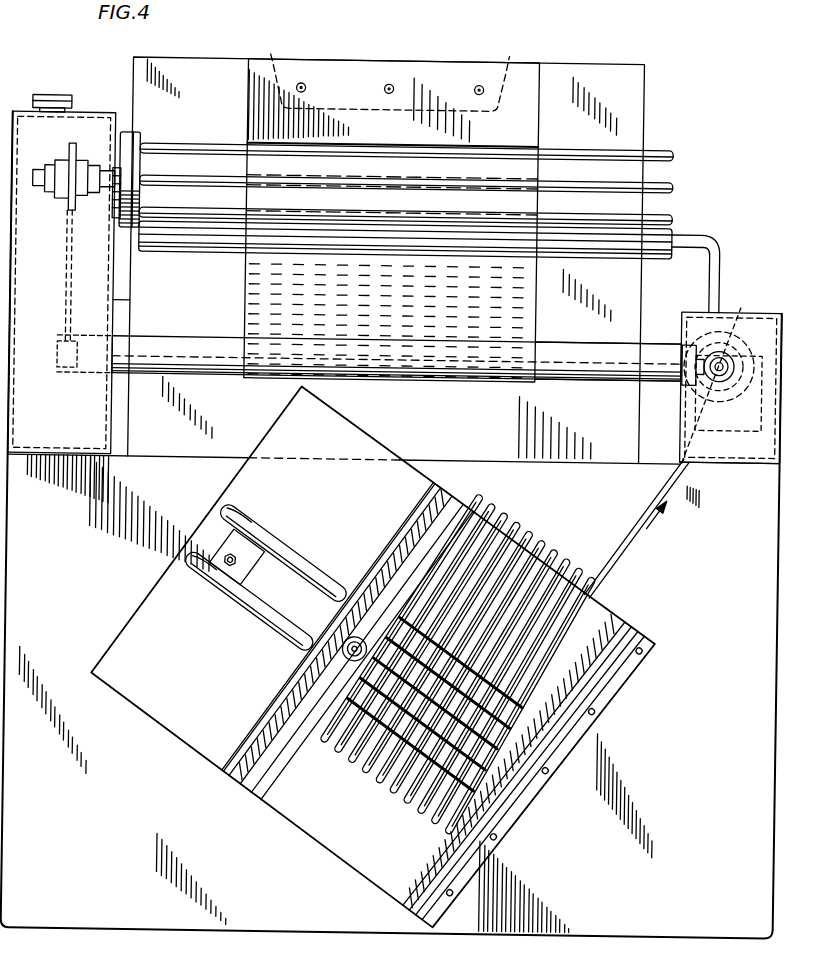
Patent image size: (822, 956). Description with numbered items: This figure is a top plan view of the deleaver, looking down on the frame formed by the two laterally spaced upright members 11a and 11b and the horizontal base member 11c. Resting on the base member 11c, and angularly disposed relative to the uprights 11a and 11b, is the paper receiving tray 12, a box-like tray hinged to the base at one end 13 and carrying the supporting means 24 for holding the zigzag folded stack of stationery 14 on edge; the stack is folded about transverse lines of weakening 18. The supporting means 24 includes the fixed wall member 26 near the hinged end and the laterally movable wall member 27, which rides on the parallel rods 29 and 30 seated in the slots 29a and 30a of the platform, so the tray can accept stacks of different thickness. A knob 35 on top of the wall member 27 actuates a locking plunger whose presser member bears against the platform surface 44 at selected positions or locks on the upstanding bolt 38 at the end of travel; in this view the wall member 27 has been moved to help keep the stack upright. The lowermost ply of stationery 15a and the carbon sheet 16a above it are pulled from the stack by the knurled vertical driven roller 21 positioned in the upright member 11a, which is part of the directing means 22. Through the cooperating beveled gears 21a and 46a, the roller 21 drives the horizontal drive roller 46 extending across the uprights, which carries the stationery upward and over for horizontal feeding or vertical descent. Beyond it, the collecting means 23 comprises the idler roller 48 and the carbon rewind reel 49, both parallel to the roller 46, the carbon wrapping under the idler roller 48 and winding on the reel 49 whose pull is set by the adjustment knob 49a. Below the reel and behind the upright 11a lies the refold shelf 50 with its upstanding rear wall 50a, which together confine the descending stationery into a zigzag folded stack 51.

The upright member 11a is at (740, 447).
The upright member 11b is at (49, 443).
The base member 11c is at (72, 818).
The paper receiving tray 12 is at (553, 792).
The hinged end 13 is at (630, 678).
The zigzag folded stack of stationery 14 is at (394, 798).
The lowermost ply of stationery 15a is at (648, 505).
The carbon sheet 16a is at (523, 302).
The lines of weakening 18 is at (544, 541).
The driven roller 21 is at (670, 410).
The beveled gear 21a is at (725, 362).
The directing means 22 is at (619, 382).
The collecting means 23 is at (160, 141).
The supporting means 24 is at (330, 844).
The wall member 26 is at (441, 855).
The wall member 27 is at (259, 801).
The rod 29 is at (188, 559).
The slot 29a is at (196, 578).
The rod 30 is at (222, 511).
The slot 30a is at (237, 527).
The knob 35 is at (362, 642).
The upstanding bolt 38 is at (233, 560).
The surface of the platform member 44 is at (167, 714).
The horizontal drive roller 46 is at (203, 317).
The beveled gear 46a is at (690, 394).
The idler roller 48 is at (205, 250).
The carbon rewind reel 49 is at (652, 150).
The adjustment knob 49a is at (44, 100).
The refold shelf 50 is at (628, 95).
The upstanding rear wall 50a is at (447, 52).
The zigzag folded stack of deleaved stationery 51 is at (527, 88).